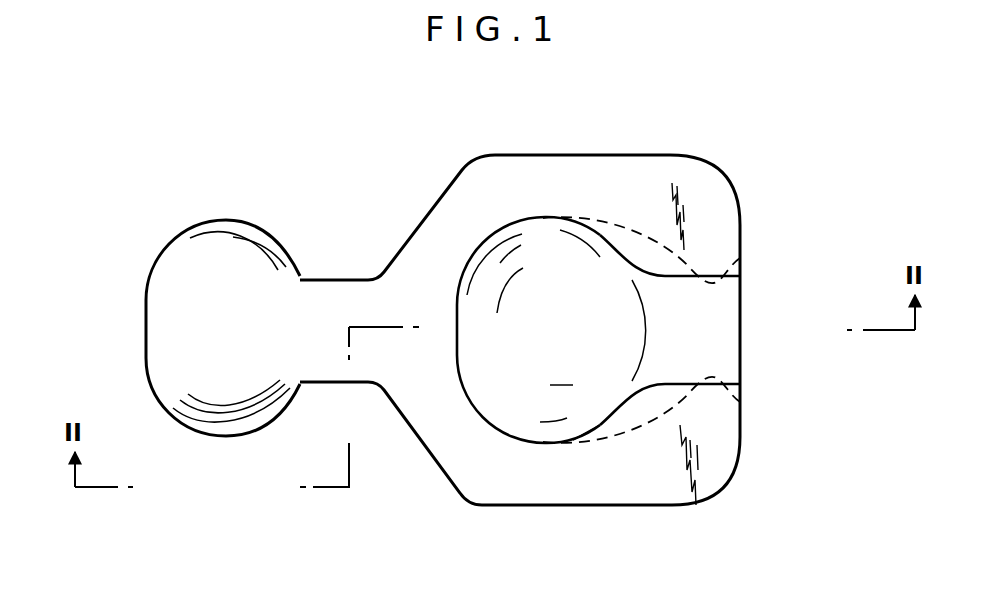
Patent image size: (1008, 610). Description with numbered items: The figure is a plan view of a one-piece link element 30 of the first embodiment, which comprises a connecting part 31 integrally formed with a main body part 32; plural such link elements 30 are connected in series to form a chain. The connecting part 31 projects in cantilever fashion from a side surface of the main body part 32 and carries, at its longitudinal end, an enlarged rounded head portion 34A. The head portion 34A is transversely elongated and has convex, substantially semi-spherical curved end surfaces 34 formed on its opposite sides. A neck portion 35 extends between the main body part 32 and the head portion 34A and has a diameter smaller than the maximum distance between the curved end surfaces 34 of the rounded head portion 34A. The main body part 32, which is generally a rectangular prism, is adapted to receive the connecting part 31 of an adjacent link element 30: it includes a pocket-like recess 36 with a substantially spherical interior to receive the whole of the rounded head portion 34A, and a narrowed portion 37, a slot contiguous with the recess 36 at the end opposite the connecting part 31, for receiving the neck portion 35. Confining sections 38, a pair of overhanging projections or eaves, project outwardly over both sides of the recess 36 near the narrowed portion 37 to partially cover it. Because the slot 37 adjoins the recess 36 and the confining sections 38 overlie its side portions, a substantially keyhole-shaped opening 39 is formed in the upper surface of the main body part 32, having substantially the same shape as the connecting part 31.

The link element 30 is at (555, 150).
The connecting part 31 is at (291, 230).
The main body part 32 is at (643, 154).
The curved end surfaces 34 is at (210, 220).
The rounded head portion 34A is at (146, 267).
The neck portion 35 is at (327, 381).
The pocket-like recess 36 is at (517, 407).
The narrowed portion 37 is at (723, 360).
The confining sections 38 is at (650, 258).
The keyhole-shaped opening 39 is at (598, 435).